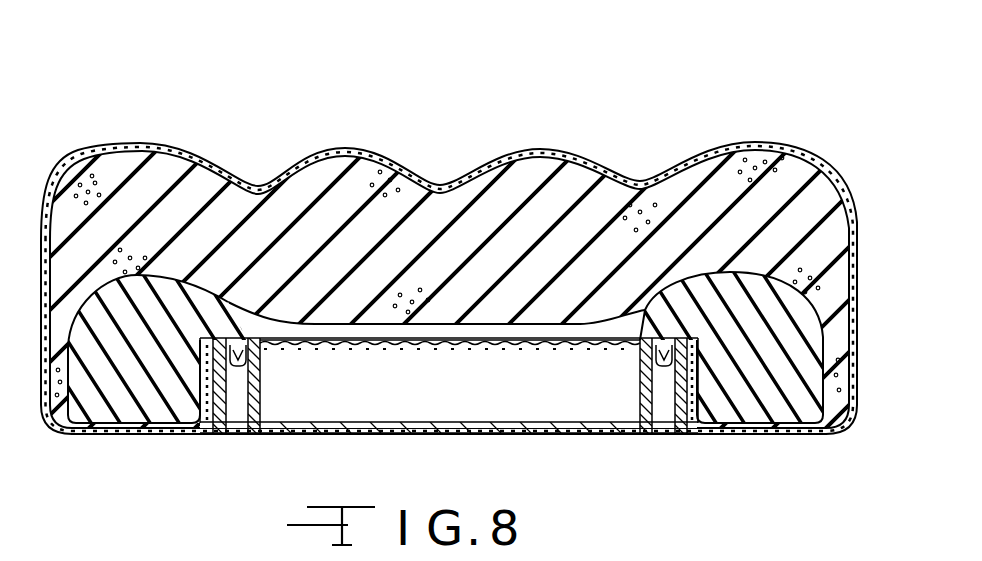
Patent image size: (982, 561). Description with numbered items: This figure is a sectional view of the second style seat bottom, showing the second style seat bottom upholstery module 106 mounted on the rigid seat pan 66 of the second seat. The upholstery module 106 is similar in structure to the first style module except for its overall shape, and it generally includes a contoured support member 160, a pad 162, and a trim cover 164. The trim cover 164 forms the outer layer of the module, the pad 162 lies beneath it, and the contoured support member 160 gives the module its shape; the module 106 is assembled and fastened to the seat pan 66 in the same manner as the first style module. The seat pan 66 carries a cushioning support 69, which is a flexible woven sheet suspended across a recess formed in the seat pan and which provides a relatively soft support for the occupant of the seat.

The second style seat bottom upholstery module 106 is at (491, 265).
The trim cover 164 is at (175, 147).
The pad 162 is at (803, 148).
The contoured support member 160 is at (805, 410).
The seat pan 66 is at (523, 434).
The cushioning support 69 is at (347, 346).